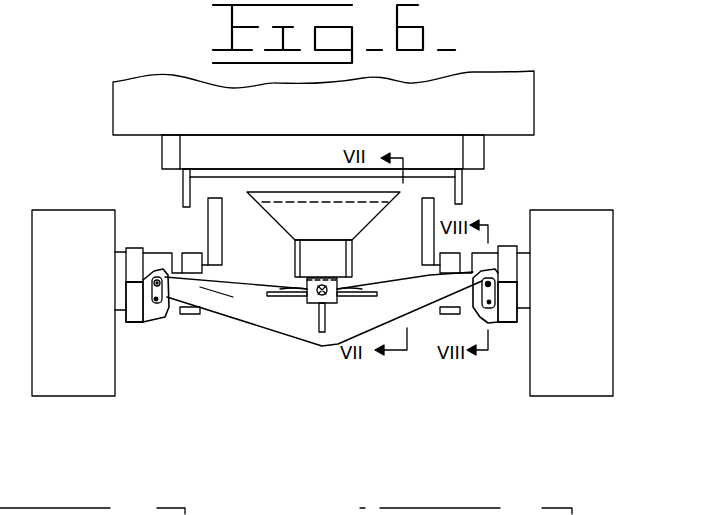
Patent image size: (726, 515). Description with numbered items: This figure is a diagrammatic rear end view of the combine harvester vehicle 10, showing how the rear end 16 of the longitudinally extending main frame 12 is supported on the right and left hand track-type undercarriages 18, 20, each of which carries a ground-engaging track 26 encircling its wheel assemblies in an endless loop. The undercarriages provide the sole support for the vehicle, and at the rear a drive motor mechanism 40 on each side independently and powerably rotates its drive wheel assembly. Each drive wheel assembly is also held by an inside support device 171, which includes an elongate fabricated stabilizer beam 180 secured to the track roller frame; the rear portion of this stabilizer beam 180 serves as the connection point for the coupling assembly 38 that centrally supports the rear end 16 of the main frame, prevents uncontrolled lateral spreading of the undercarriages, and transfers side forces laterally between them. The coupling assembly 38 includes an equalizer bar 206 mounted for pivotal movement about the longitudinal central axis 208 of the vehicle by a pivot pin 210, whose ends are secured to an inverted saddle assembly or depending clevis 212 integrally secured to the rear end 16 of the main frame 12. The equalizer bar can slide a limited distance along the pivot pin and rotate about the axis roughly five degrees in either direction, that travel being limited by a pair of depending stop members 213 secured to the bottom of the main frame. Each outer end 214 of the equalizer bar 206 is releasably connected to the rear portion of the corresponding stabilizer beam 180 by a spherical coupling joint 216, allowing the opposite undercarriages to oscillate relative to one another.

The combine harvester vehicle 10 is at (103, 68).
The main frame 12 is at (485, 151).
The rear end 16 is at (170, 152).
The right hand track-type undercarriage 18 is at (560, 208).
The left hand track-type undercarriage 20 is at (80, 208).
The ground-engaging track 26 is at (107, 383).
The coupling assembly 38 is at (293, 342).
The drive motor mechanism 40 is at (155, 253).
The inside support device 171 is at (510, 244).
The stabilizer beam 180 is at (135, 318).
The equalizer bar 206 is at (233, 312).
The longitudinal central axis 208 is at (307, 303).
The pivot pin 210 is at (337, 303).
The depending clevis 212 is at (306, 265).
The depending stop members 213 is at (225, 267).
The outer end of the equalizer bar 214 is at (182, 292).
The spherical coupling joint 216 is at (485, 293).